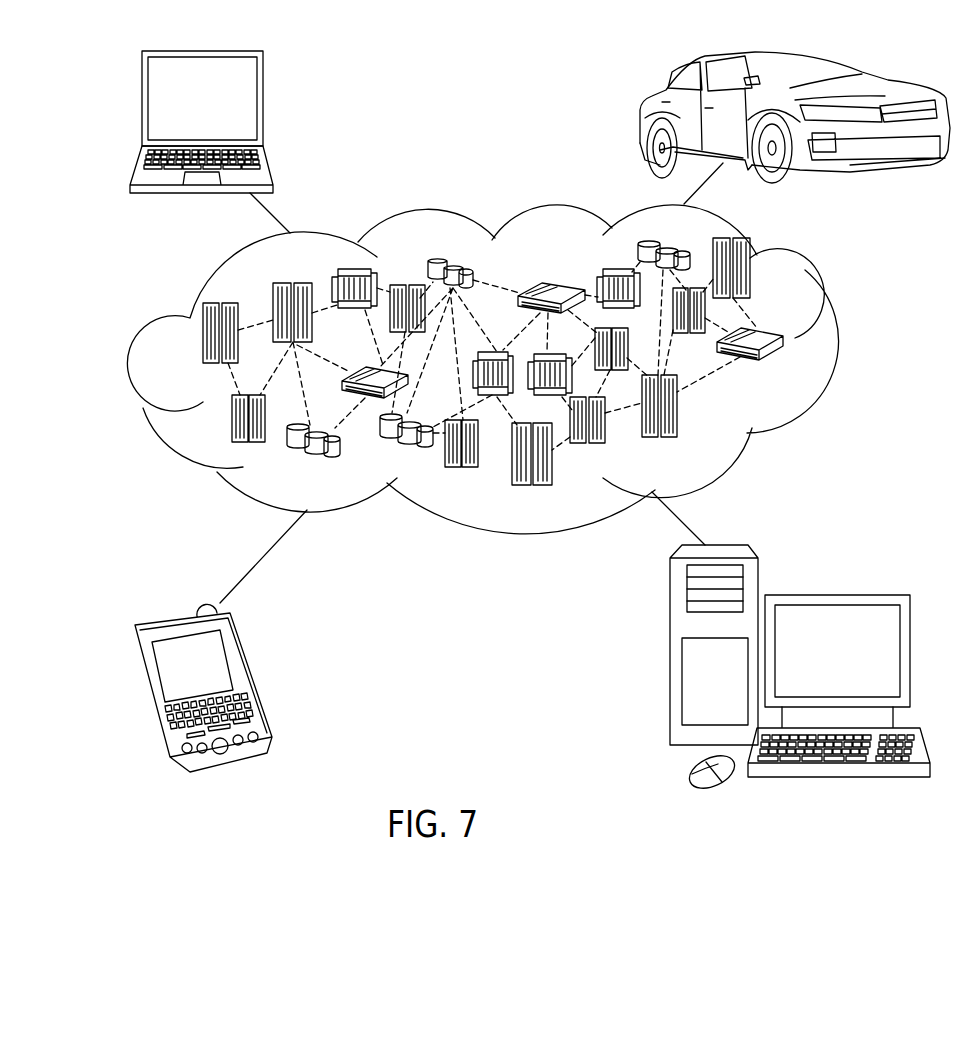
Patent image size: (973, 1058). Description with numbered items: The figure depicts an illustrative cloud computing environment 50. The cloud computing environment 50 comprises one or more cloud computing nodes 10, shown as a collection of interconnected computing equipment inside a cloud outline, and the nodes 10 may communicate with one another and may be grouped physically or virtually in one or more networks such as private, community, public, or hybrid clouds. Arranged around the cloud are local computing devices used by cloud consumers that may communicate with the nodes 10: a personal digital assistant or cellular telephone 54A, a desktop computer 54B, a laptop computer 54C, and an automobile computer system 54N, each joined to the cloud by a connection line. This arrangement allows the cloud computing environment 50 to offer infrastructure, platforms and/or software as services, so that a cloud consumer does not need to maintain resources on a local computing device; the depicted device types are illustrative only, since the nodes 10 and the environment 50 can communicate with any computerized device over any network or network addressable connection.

The cloud computing nodes 10 is at (790, 378).
The cloud computing environment 50 is at (838, 343).
The personal digital assistant or cellular telephone 54A is at (255, 678).
The desktop computer 54B is at (835, 593).
The laptop computer 54C is at (265, 107).
The automobile computer system 54N is at (645, 120).